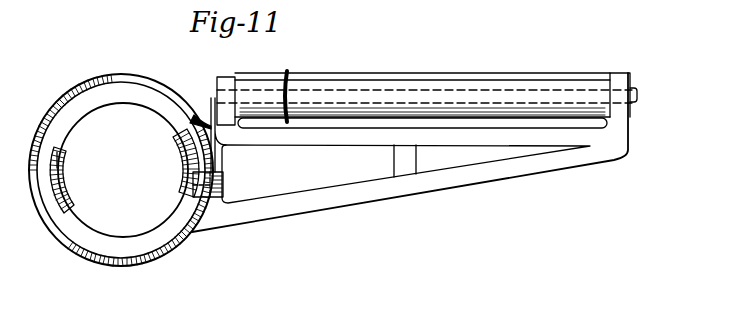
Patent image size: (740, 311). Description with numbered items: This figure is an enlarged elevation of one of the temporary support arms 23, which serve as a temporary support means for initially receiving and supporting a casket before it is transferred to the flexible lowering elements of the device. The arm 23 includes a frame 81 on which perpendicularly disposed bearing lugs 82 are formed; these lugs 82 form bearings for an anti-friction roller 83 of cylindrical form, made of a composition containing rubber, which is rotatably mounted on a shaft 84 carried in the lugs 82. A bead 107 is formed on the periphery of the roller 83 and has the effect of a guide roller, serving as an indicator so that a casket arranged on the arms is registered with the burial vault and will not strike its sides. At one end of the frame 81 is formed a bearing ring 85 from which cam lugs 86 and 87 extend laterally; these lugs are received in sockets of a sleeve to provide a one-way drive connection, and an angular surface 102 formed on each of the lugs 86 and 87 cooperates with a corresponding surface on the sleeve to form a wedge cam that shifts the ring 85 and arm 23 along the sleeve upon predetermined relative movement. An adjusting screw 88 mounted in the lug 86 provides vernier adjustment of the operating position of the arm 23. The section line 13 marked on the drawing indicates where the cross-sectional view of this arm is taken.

The bearing ring 85 is at (108, 88).
The angular surface 102 is at (54, 190).
The cam lug 87 is at (58, 160).
The adjusting screw 88 is at (218, 150).
The cam lug 86 is at (200, 187).
The anti-friction roller 83 is at (467, 58).
The bearing lugs 82 is at (225, 84).
The shaft 84 is at (638, 95).
The bead 107 is at (287, 76).
The frame 81 is at (357, 202).
The temporary support arm 23 is at (548, 173).
The section line 13 is at (234, 55).